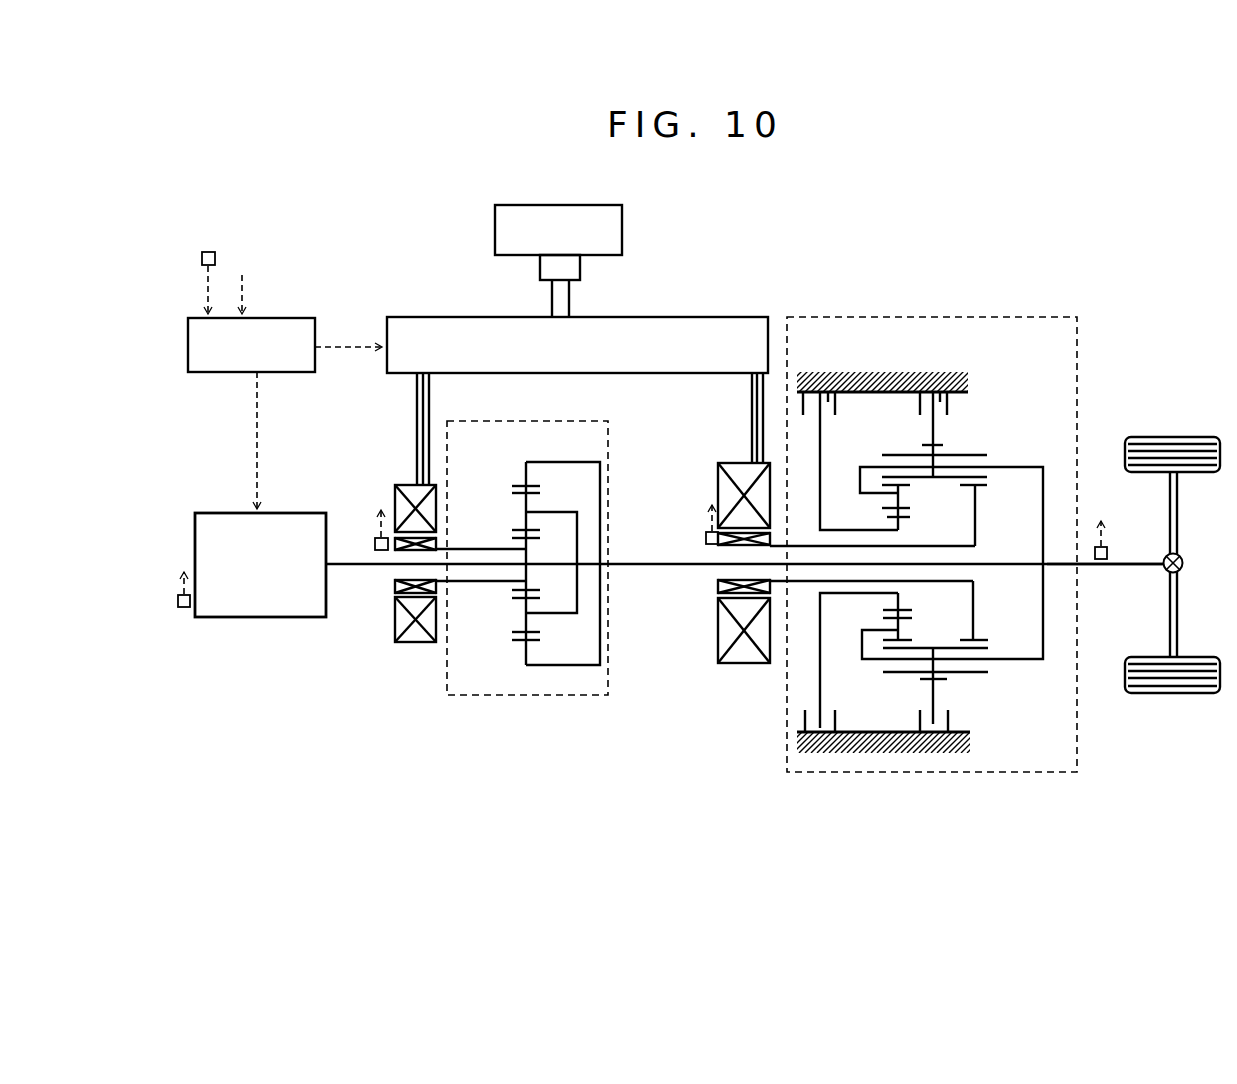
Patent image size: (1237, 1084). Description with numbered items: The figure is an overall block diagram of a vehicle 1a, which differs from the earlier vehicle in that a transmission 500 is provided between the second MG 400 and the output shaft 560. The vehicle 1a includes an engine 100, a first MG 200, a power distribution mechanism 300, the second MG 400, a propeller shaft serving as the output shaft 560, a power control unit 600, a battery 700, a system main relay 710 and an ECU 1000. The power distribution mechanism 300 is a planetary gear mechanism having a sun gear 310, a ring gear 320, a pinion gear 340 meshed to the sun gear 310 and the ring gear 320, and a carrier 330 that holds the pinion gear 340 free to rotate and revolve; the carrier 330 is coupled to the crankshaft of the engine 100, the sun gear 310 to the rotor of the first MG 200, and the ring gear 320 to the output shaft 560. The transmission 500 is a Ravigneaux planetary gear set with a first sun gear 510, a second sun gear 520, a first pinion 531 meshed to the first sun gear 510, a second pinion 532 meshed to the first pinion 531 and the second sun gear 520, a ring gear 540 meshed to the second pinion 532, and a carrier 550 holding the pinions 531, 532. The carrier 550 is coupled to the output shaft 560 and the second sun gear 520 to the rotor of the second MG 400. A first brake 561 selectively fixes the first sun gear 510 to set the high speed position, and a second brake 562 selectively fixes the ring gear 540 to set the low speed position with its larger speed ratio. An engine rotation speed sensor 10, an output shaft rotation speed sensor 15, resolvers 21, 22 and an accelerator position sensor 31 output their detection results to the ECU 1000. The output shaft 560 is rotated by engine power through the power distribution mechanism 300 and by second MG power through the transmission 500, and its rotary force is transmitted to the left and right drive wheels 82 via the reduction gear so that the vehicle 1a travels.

The vehicle 1a is at (582, 172).
The engine rotation speed sensor 10 is at (184, 607).
The output shaft rotation speed sensor 15 is at (1107, 551).
The resolver 21 is at (375, 544).
The resolver 22 is at (706, 540).
The accelerator position sensor 31 is at (208, 252).
The drive wheels 82 is at (1195, 437).
The engine 100 is at (270, 617).
The first MG 200 is at (403, 485).
The power distribution mechanism 300 is at (527, 581).
The sun gear 310 is at (538, 538).
The ring gear 320 is at (514, 486).
The carrier 330 is at (571, 511).
The pinion gear 340 is at (513, 492).
The second MG 400 is at (735, 463).
The transmission 500 is at (898, 544).
The first sun gear 510 is at (908, 517).
The second sun gear 520 is at (980, 487).
The first pinion 531 is at (887, 506).
The second pinion 532 is at (962, 455).
The ring gear 540 is at (943, 445).
The carrier 550 is at (1008, 467).
The output shaft 560 is at (1122, 573).
The B1 brake 561 is at (826, 390).
The B2 brake 562 is at (940, 390).
The power control unit 600 is at (688, 317).
The battery 700 is at (622, 223).
The system main relay 710 is at (580, 268).
The ECU 1000 is at (272, 318).